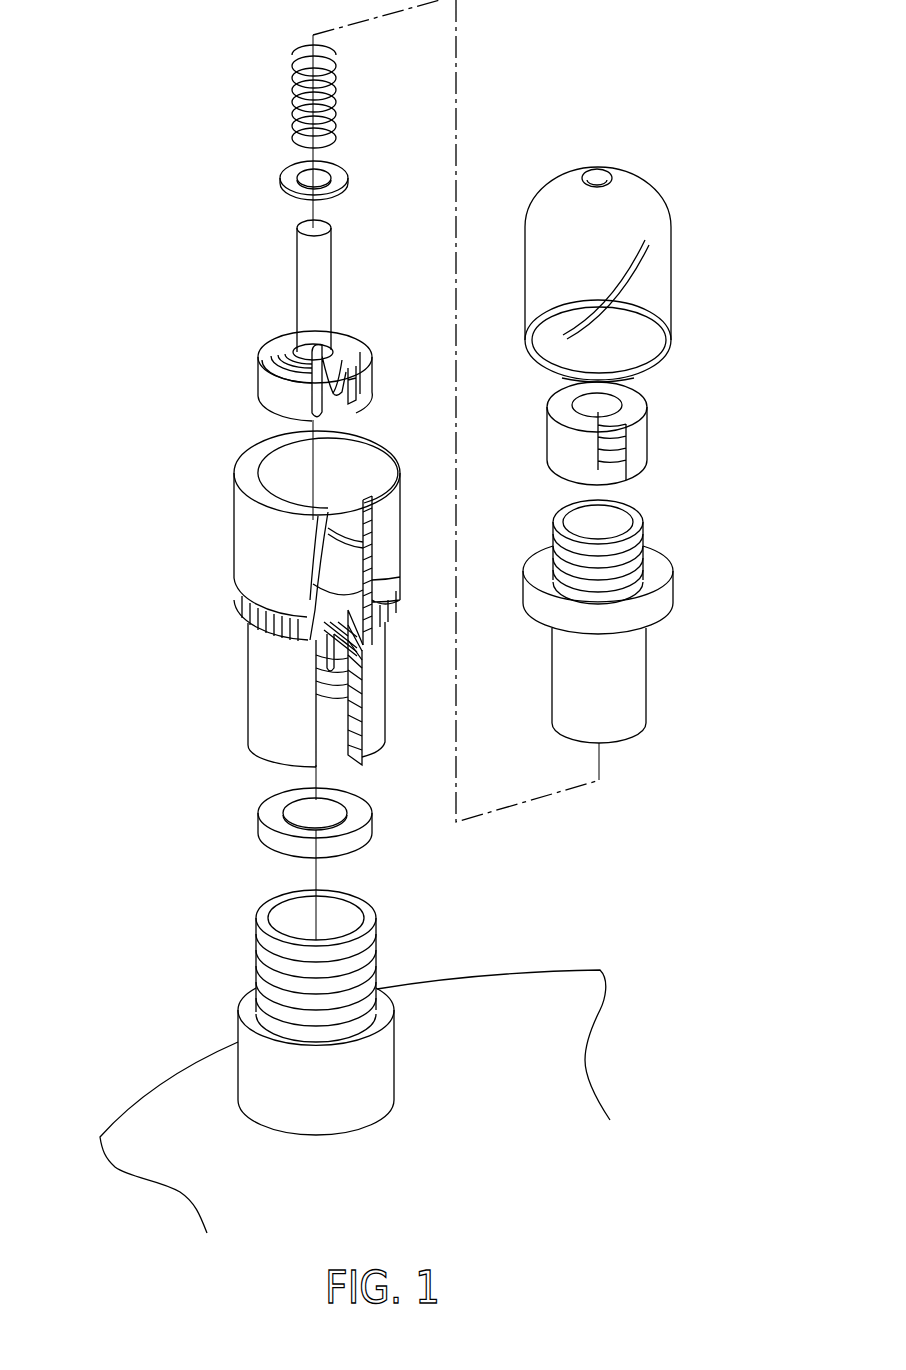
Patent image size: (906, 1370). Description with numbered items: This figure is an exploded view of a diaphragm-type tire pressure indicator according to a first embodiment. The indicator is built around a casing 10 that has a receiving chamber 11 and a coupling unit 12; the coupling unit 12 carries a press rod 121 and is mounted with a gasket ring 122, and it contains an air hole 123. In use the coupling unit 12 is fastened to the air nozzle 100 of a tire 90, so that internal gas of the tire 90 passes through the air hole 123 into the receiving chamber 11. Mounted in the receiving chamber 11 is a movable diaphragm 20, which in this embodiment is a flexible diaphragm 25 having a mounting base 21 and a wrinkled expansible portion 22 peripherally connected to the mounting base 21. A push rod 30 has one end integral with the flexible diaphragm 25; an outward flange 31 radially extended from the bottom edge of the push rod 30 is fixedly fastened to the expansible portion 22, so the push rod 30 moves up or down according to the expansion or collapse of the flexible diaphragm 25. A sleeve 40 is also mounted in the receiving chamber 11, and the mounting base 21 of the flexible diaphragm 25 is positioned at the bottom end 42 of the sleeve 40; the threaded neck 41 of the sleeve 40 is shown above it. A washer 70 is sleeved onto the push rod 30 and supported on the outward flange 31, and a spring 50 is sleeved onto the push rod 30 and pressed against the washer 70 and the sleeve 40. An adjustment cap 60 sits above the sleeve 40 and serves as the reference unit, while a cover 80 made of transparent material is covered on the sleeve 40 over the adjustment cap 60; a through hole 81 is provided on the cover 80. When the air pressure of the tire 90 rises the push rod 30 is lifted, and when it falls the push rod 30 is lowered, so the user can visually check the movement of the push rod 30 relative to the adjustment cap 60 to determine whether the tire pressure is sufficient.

The casing 10 is at (206, 554).
The receiving chamber 11 is at (260, 470).
The coupling unit 12 is at (333, 720).
The press rod 121 is at (322, 655).
The gasket ring 122 is at (258, 836).
The air hole 123 is at (318, 621).
The movable diaphragm 20 is at (250, 388).
The mounting base 21 is at (368, 386).
The wrinkled expansible portion 22 is at (350, 342).
The flexible diaphragm 25 is at (329, 353).
The push rod 30 is at (305, 255).
The outward flange 31 is at (280, 342).
The sleeve 40 is at (690, 588).
The threaded neck 41 is at (640, 515).
The bottom end 42 is at (646, 697).
The spring 50 is at (292, 100).
The adjustment cap 60 is at (650, 428).
The washer 70 is at (290, 184).
The cover 80 is at (665, 240).
The through hole 81 is at (600, 172).
The tire 90 is at (550, 982).
The air nozzle 100 is at (378, 948).